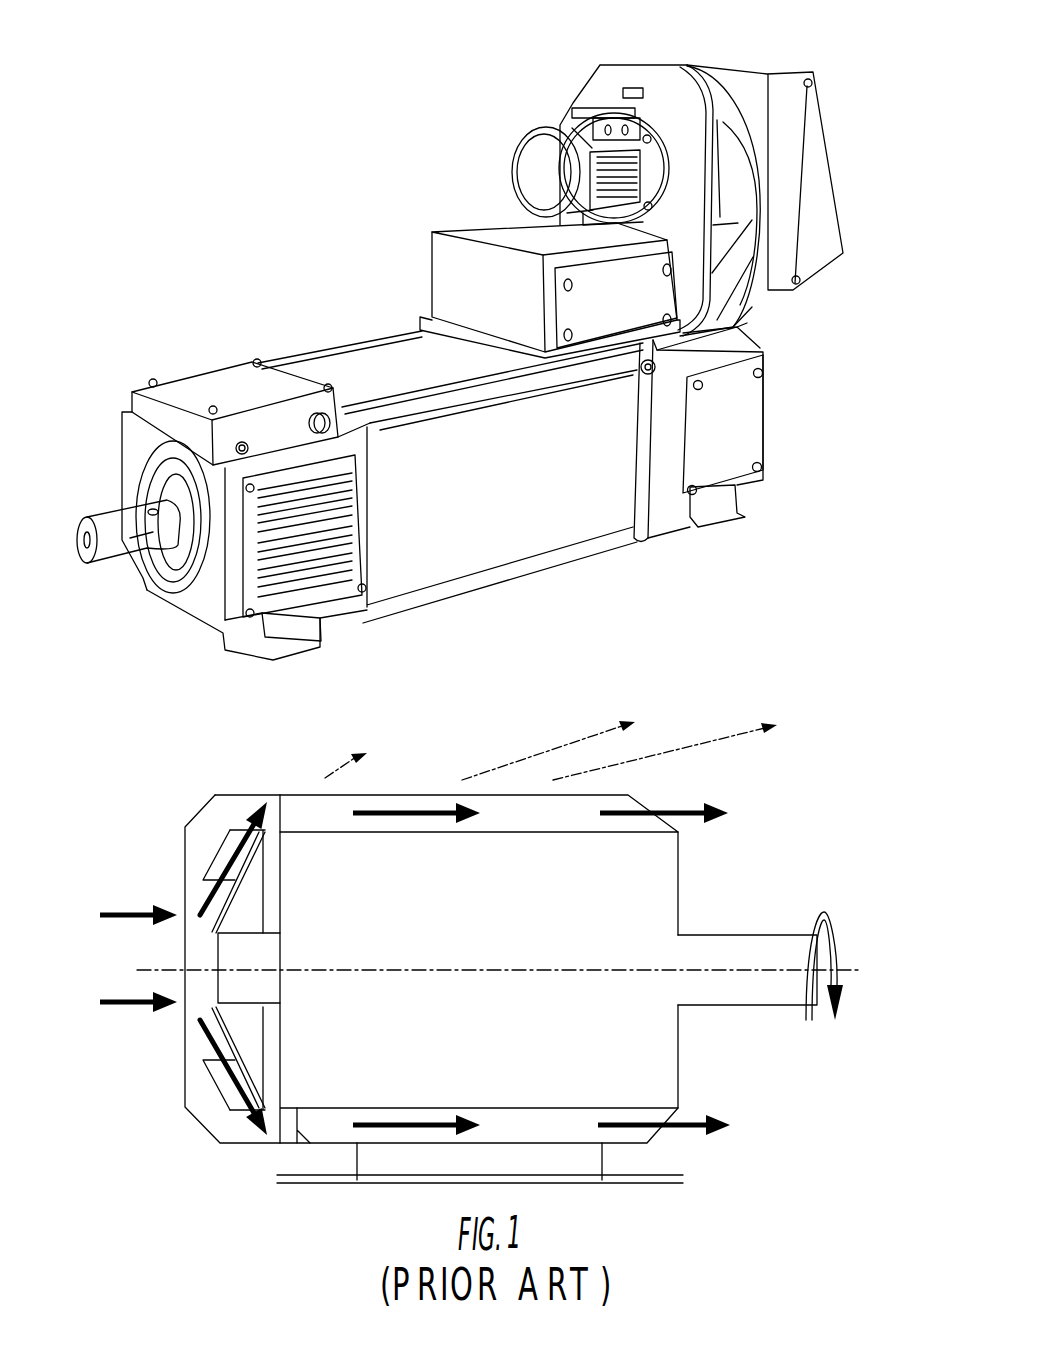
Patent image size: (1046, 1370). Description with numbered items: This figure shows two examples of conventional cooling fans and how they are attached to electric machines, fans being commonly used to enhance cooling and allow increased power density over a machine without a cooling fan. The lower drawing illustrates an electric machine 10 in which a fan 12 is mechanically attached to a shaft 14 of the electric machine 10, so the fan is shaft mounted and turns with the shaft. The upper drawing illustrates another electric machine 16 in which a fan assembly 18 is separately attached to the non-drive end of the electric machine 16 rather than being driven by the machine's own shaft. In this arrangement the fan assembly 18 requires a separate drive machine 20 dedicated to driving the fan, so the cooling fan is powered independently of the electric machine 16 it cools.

The electric machine 10 is at (480, 746).
The fan 12 is at (237, 888).
The shaft 14 is at (248, 990).
The electric machine 16 is at (318, 297).
The fan assembly 18 is at (738, 56).
The drive machine 20 is at (534, 170).